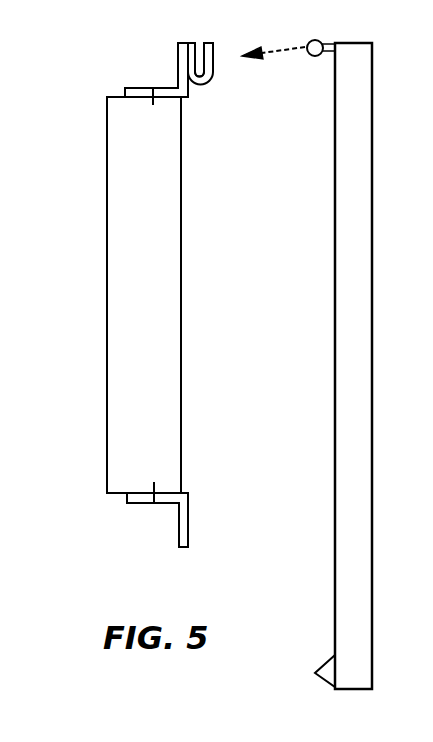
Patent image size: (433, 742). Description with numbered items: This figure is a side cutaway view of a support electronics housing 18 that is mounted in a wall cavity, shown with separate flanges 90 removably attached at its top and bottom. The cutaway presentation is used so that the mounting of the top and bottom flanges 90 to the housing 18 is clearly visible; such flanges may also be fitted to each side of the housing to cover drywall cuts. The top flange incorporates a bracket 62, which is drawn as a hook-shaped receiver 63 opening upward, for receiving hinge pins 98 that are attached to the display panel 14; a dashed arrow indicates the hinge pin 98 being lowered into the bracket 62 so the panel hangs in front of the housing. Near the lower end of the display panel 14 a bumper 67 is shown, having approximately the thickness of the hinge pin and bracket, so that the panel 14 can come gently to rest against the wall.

The display panel 14 is at (370, 278).
The housing 18 is at (117, 270).
The flange 90 is at (172, 87).
The hook 63 is at (198, 52).
The bracket 62 is at (215, 60).
The hinge pin 98 is at (317, 40).
The bumper 67 is at (327, 680).